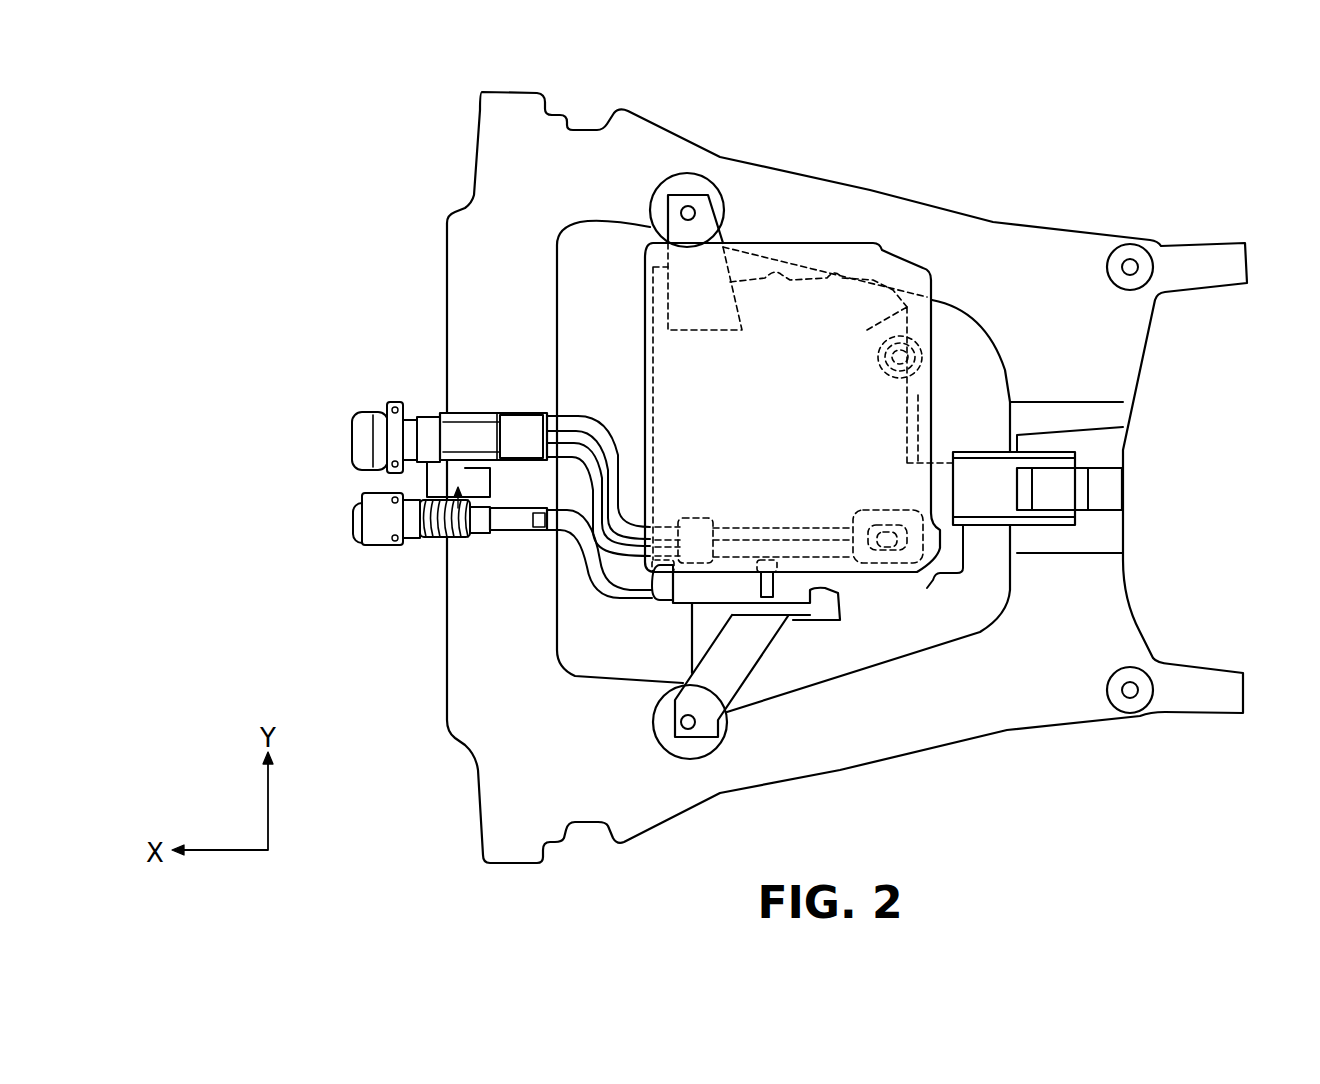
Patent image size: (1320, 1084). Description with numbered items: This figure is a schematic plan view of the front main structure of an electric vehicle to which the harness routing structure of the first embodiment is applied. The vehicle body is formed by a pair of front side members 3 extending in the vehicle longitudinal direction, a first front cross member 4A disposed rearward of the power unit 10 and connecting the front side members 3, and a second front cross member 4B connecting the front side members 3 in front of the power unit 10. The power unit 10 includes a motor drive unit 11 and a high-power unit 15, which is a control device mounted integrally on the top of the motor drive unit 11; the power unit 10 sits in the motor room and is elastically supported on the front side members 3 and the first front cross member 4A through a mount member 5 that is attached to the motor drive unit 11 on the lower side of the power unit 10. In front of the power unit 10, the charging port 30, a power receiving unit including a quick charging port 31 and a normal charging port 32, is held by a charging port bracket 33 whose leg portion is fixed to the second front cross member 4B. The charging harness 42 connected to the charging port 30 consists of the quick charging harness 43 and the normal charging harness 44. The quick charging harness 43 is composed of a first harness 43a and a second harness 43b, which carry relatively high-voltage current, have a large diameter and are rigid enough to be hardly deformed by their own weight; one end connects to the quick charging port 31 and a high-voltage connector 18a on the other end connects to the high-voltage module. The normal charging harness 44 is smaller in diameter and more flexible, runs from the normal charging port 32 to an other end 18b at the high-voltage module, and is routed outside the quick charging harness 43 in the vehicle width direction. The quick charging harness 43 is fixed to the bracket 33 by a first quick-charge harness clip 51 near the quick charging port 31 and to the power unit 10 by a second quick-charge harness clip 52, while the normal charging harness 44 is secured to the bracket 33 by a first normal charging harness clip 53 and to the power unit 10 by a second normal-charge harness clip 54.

The front side member 3 is at (832, 192).
The first front cross member 4A is at (1113, 368).
The second front cross member 4B is at (473, 643).
The mount member 5 is at (715, 270).
The power unit 10 is at (1027, 112).
The motor drive unit 11 is at (928, 300).
The high-power unit 15 is at (897, 273).
The high-voltage connector 18a is at (900, 563).
The other end of normal charging harness 18b is at (924, 368).
The charging port 30 is at (334, 513).
The quick charging port 31 is at (358, 428).
The normal charging port 32 is at (360, 527).
The charging port bracket 33 is at (443, 537).
The charging harness 42 is at (599, 483).
The quick charging harness 43 is at (598, 423).
The first harness 43a is at (578, 413).
The second harness 43b is at (615, 440).
The normal charging harness 44 is at (583, 565).
The first quick-charge harness clip 51 is at (517, 420).
The second quick-charge harness clip 52 is at (693, 563).
The first normal charging harness clip 53 is at (540, 532).
The second normal-charge harness clip 54 is at (657, 600).